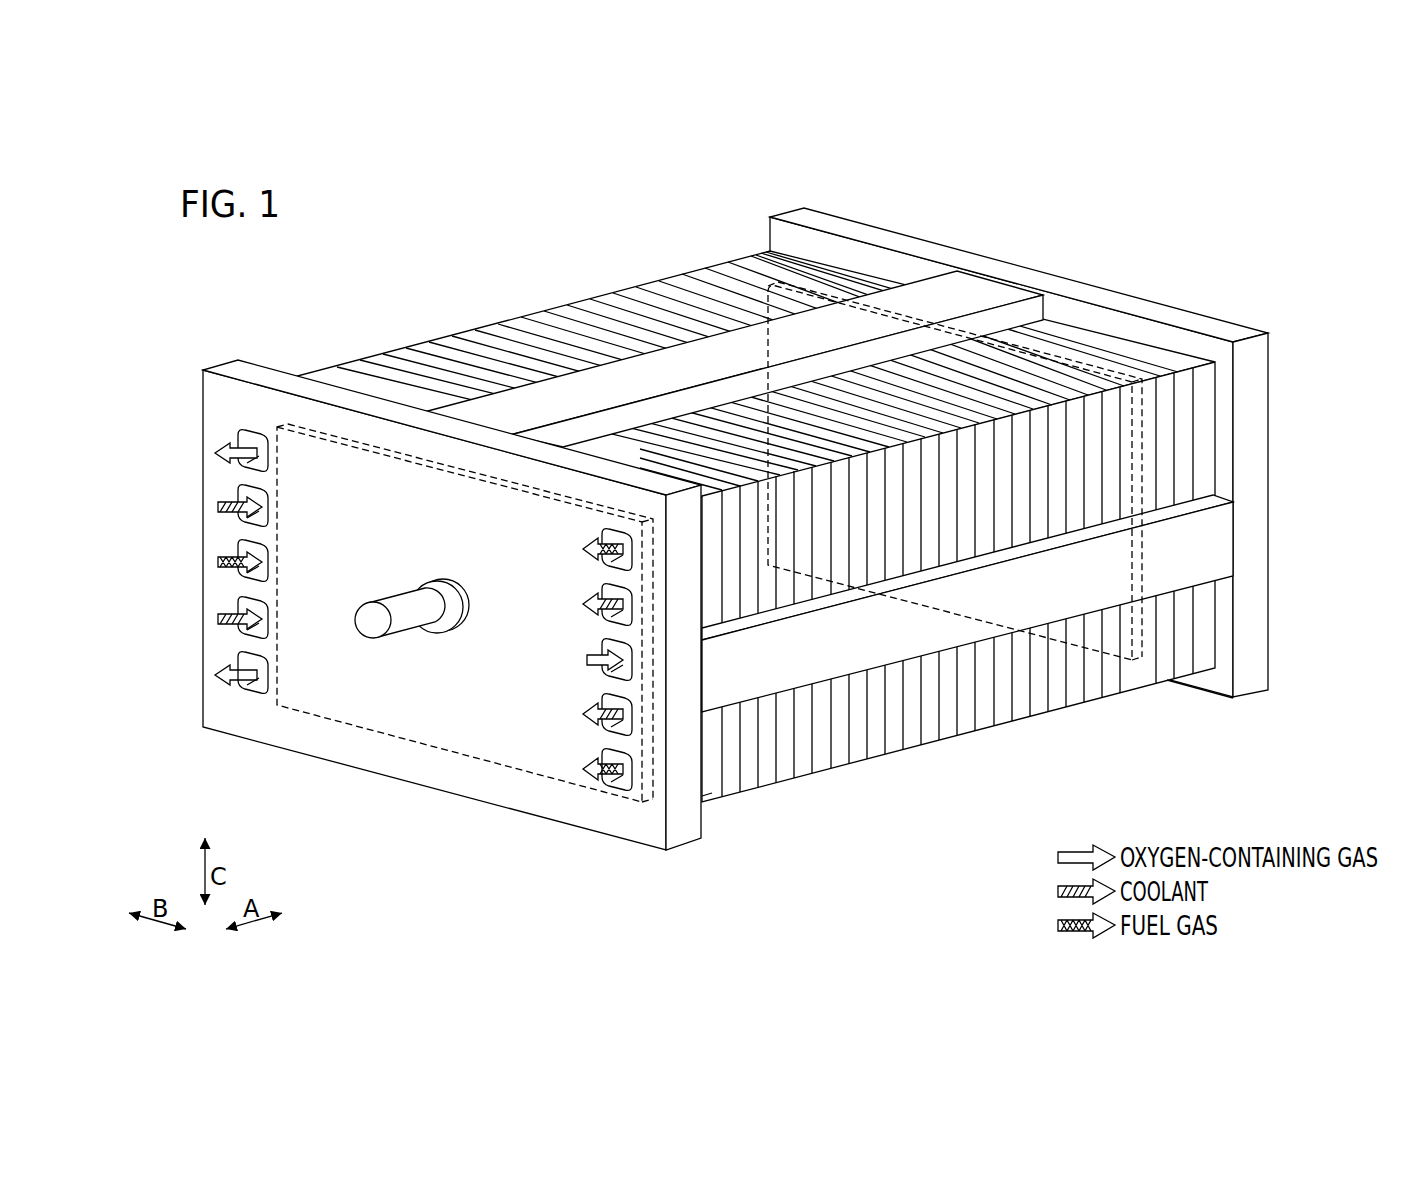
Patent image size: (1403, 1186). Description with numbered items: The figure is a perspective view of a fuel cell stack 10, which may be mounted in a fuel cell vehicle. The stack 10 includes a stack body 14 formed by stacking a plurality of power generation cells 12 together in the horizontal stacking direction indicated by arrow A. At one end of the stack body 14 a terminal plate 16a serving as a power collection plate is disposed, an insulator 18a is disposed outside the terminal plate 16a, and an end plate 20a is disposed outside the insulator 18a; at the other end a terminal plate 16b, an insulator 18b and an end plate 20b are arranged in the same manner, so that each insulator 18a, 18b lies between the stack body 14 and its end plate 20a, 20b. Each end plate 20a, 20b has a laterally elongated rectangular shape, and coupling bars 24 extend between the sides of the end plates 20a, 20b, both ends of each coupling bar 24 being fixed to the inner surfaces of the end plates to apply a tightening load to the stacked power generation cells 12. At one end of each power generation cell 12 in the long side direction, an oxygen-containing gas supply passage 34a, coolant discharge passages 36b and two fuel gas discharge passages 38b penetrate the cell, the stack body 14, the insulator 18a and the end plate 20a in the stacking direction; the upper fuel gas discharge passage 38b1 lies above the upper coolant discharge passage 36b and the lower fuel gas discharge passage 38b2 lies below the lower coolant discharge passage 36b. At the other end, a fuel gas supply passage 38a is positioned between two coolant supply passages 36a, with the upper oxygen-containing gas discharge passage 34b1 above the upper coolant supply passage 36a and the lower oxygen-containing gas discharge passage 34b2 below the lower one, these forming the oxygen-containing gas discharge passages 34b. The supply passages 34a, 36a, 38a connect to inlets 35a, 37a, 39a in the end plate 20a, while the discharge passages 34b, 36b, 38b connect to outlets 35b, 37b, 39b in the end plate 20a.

The fuel cell stack 10 is at (324, 253).
The power generation cell 12 is at (547, 318).
The stack body 14 is at (726, 553).
The terminal plate 16a is at (505, 770).
The terminal plate 16b is at (1146, 457).
The insulator 18a is at (713, 802).
The insulator 18b is at (1212, 650).
The end plate 20a is at (434, 779).
The end plate 20b is at (1270, 372).
The coupling bar 24 is at (988, 288).
The oxygen-containing gas supply passage 34a is at (641, 649).
The oxygen-containing gas discharge passage 34b is at (281, 564).
The upper oxygen-containing gas discharge passage 34b1 is at (281, 552).
The lower oxygen-containing gas discharge passage 34b2 is at (262, 683).
The inlet 35a is at (625, 672).
The outlet 35b is at (248, 438).
The coolant supply passage 36a is at (314, 575).
The coolant discharge passage 36b is at (550, 649).
The inlet 37a is at (262, 505).
The outlet 37b is at (600, 590).
The fuel gas supply passage 38a is at (252, 557).
The fuel gas discharge passage 38b is at (546, 624).
The upper fuel gas discharge passage 38b1 is at (546, 624).
The lower fuel gas discharge passage 38b2 is at (600, 760).
The inlet 39a is at (248, 547).
The outlet 39b is at (620, 538).